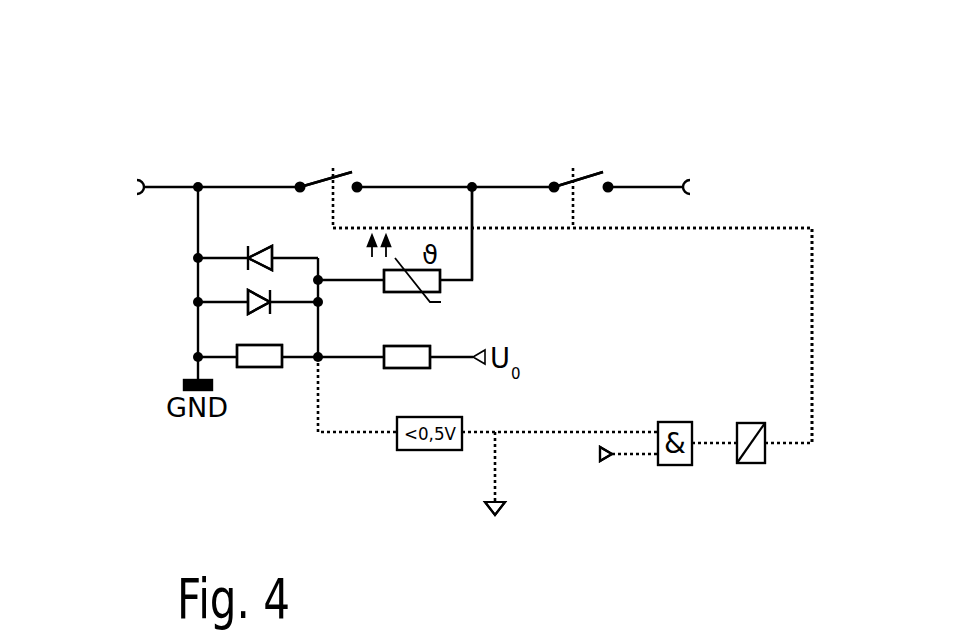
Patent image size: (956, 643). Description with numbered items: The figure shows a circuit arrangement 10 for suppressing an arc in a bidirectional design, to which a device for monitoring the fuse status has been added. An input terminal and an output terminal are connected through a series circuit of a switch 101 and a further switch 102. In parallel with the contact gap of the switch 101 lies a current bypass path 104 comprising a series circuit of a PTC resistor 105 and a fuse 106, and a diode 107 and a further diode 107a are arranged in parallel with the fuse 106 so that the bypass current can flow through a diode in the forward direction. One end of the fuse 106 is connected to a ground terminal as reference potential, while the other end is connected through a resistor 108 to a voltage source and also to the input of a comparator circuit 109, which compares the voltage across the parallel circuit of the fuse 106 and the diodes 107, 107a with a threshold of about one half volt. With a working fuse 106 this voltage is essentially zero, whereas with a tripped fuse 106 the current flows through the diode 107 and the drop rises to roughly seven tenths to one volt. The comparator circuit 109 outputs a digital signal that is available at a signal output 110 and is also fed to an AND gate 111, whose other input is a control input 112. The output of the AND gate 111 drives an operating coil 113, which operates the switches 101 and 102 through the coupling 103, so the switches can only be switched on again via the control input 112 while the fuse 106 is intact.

The circuit arrangement 10 is at (719, 116).
The switch 101 is at (323, 173).
The further switch 102 is at (590, 172).
The coupling 103 is at (782, 228).
The current bypass path 104 is at (474, 259).
The PTC resistor 105 is at (395, 293).
The fuse 106 is at (260, 367).
The diode 107 is at (260, 247).
The diode 107a is at (262, 307).
The resistor 108 is at (430, 368).
The comparator circuit 109 is at (418, 450).
The signal output 110 is at (490, 515).
The AND gate 111 is at (677, 465).
The control input 112 is at (605, 460).
The operating coil 113 is at (750, 423).